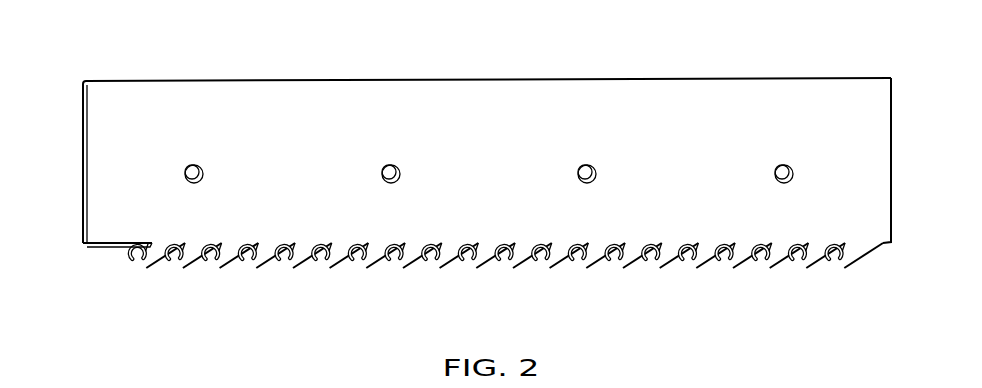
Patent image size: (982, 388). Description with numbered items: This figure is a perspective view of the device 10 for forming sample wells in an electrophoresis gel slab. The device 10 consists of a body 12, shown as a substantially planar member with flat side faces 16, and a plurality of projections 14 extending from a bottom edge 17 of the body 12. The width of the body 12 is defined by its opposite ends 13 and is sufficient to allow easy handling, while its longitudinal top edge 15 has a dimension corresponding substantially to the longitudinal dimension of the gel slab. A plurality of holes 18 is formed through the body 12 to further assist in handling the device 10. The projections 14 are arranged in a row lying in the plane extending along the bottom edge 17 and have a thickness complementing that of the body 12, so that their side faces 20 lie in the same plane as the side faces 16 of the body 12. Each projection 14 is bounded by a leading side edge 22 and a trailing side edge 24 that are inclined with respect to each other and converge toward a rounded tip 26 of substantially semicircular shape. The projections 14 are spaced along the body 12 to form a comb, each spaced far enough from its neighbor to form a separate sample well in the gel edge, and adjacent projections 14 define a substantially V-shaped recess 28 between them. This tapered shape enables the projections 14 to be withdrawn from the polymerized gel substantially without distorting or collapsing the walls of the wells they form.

The device 10 is at (487, 168).
The body 12 is at (487, 175).
The opposite ends 13 is at (79, 92).
The projections 14 is at (506, 262).
The longitudinal top edge 15 is at (238, 80).
The side faces 16 is at (553, 90).
The bottom edge 17 is at (120, 247).
The holes 18 is at (390, 165).
The side faces 20 is at (593, 253).
The leading side edge 22 is at (727, 250).
The trailing side edge 24 is at (784, 262).
The tip 26 is at (576, 276).
The V-shaped recess 28 is at (458, 264).